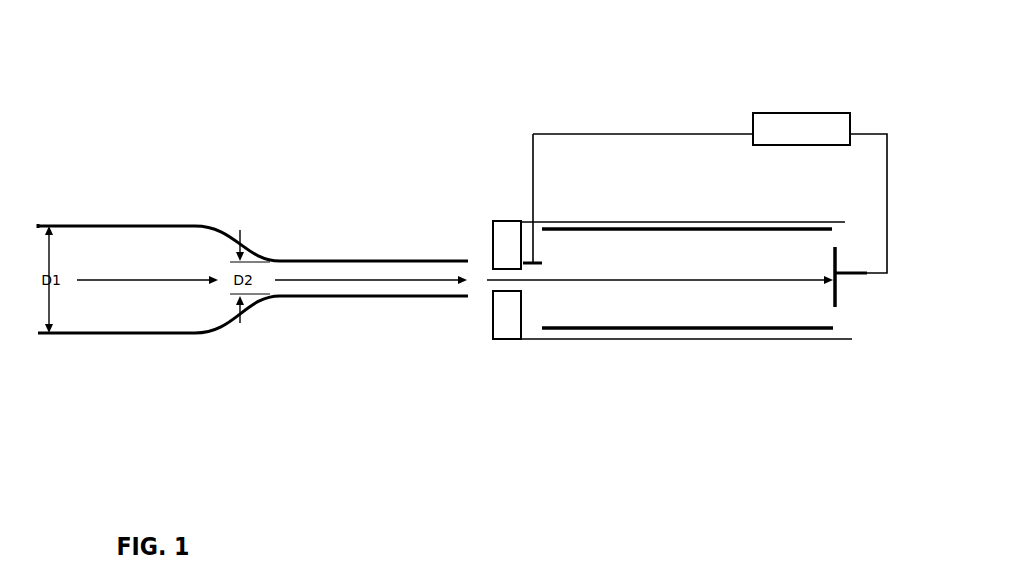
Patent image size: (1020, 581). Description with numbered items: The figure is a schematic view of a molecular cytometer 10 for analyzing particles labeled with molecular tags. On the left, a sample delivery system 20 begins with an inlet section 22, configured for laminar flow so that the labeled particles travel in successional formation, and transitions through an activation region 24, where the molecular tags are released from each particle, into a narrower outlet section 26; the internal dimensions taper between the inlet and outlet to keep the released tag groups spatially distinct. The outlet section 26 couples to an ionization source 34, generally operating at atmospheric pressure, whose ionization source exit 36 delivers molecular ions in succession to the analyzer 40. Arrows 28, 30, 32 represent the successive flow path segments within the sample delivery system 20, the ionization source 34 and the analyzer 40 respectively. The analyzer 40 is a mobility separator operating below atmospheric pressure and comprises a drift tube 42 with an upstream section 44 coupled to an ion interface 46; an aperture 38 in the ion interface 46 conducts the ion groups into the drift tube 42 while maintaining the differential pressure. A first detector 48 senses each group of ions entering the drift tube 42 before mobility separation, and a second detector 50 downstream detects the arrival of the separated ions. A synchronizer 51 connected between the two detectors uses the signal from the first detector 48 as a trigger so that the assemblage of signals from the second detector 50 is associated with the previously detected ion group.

The molecular cytometer 10 is at (532, 56).
The sample delivery system 20 is at (150, 225).
The inlet section 22 is at (37, 225).
The activation region 24 is at (181, 236).
The outlet section 26 is at (282, 260).
The arrow 28 is at (142, 282).
The arrow 30 is at (380, 282).
The arrow 32 is at (616, 283).
The ionization source 34 is at (372, 261).
The ionization source exit 36 is at (466, 297).
The aperture 38 is at (497, 292).
The analyzer 40 is at (643, 224).
The drift tube 42 is at (702, 330).
The upstream section 44 is at (542, 328).
The ion interface 46 is at (503, 221).
The first detector 48 is at (535, 250).
The second detector 50 is at (838, 258).
The synchronizer 51 is at (802, 112).